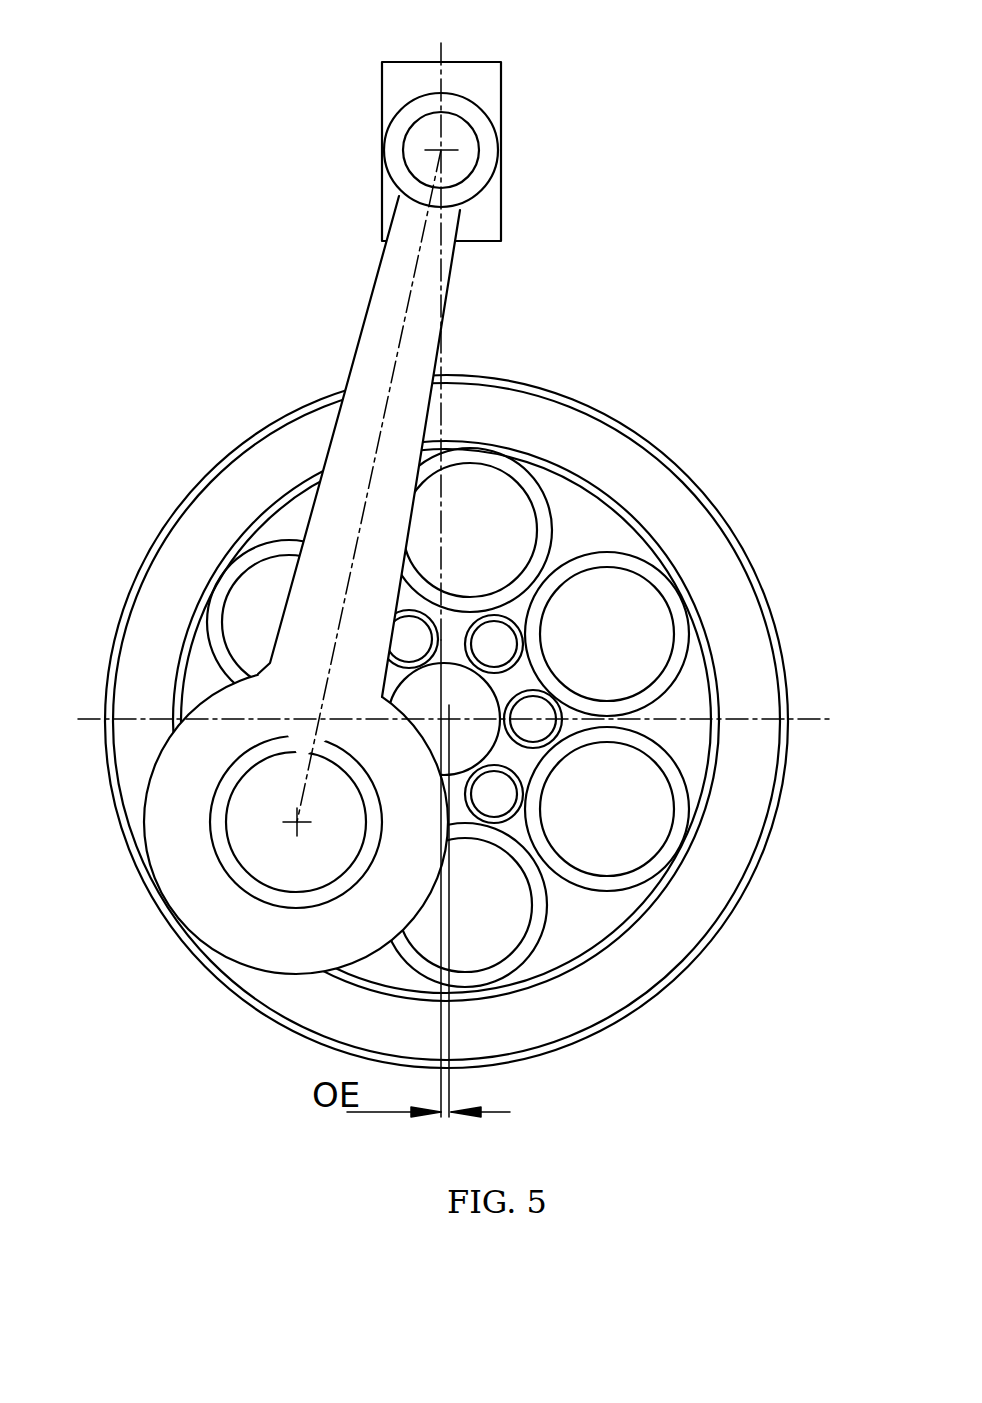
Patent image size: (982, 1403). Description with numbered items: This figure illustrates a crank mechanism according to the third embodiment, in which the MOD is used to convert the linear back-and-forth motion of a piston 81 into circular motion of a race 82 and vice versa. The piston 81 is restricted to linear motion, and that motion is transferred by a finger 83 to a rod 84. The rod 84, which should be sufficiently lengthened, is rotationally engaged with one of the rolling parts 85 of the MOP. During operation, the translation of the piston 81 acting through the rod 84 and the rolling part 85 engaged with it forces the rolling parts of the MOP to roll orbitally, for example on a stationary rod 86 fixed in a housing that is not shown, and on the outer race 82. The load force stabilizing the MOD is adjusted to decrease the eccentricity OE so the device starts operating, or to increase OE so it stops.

The piston 81 is at (488, 83).
The race 82 is at (590, 443).
The finger 83 is at (456, 137).
The rod 84 is at (392, 318).
The rolling part 85 is at (265, 852).
The stationary rod 86 is at (487, 703).